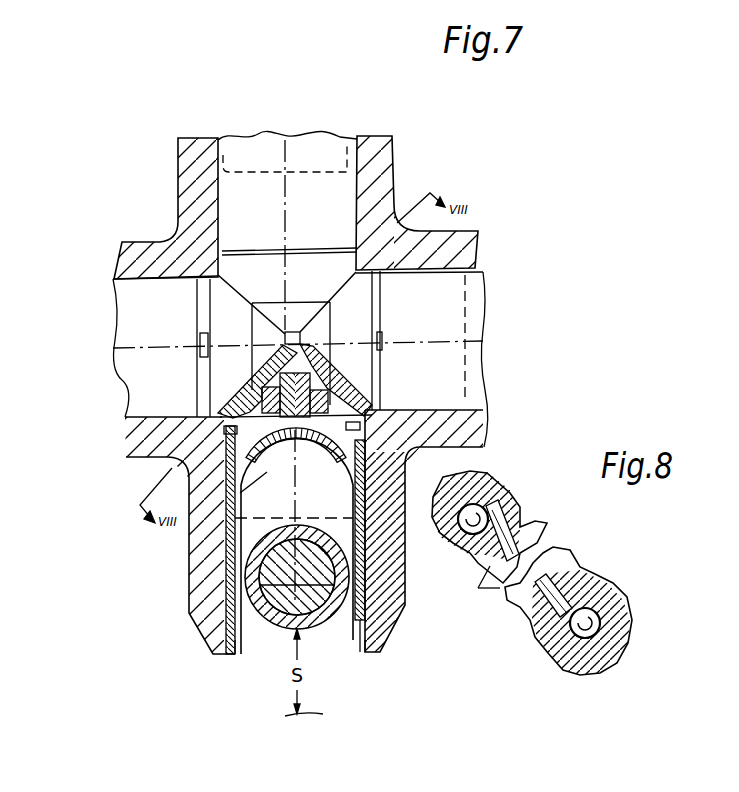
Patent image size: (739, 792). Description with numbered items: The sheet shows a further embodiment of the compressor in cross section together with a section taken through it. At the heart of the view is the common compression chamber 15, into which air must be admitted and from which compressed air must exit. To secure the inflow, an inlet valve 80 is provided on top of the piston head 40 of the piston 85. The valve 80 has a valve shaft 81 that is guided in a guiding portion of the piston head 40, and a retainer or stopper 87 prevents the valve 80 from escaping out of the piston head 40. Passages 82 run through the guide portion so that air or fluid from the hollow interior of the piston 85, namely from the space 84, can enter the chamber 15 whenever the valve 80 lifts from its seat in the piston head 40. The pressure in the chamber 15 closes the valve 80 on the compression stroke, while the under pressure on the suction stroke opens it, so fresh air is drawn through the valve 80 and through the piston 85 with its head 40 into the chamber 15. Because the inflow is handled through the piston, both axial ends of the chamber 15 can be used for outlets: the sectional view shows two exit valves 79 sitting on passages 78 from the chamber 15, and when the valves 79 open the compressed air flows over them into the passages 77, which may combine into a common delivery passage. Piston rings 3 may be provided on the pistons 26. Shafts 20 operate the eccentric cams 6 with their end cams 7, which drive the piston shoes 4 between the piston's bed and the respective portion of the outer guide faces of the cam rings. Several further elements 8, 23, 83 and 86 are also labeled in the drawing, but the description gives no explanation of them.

In FIG. 7, the piston ring 3 is at (247, 250).
In FIG. 7, the piston shoe 4 is at (172, 468).
In FIG. 7, the eccentric cam 6 is at (190, 613).
In FIG. 7, the end cam 7 is at (294, 546).
In FIG. 7, the housing wall 8 is at (197, 180).
In FIG. 7, the compression chamber 15 is at (115, 348).
In FIG. 8, the compression chamber 15 is at (507, 550).
In FIG. 7, the shaft 20 is at (190, 588).
In FIG. 7, the foot 23 is at (235, 640).
In FIG. 7, the piston 26 is at (328, 187).
In FIG. 7, the piston head 40 is at (248, 275).
In FIG. 8, the piston head 40 is at (557, 562).
In FIG. 8, the passage 77 is at (453, 497).
In FIG. 8, the passage 78 is at (505, 530).
In FIG. 8, the exit valve 79 is at (487, 512).
In FIG. 7, the inlet valve 80 is at (313, 255).
In FIG. 7, the valve shaft 81 is at (367, 352).
In FIG. 7, the passage 82 is at (337, 387).
In FIG. 7, the valve stem 83 is at (355, 402).
In FIG. 7, the space 84 is at (215, 426).
In FIG. 7, the piston 85 is at (226, 555).
In FIG. 7, the body wall 86 is at (197, 530).
In FIG. 7, the retainer or stopper 87 is at (308, 440).